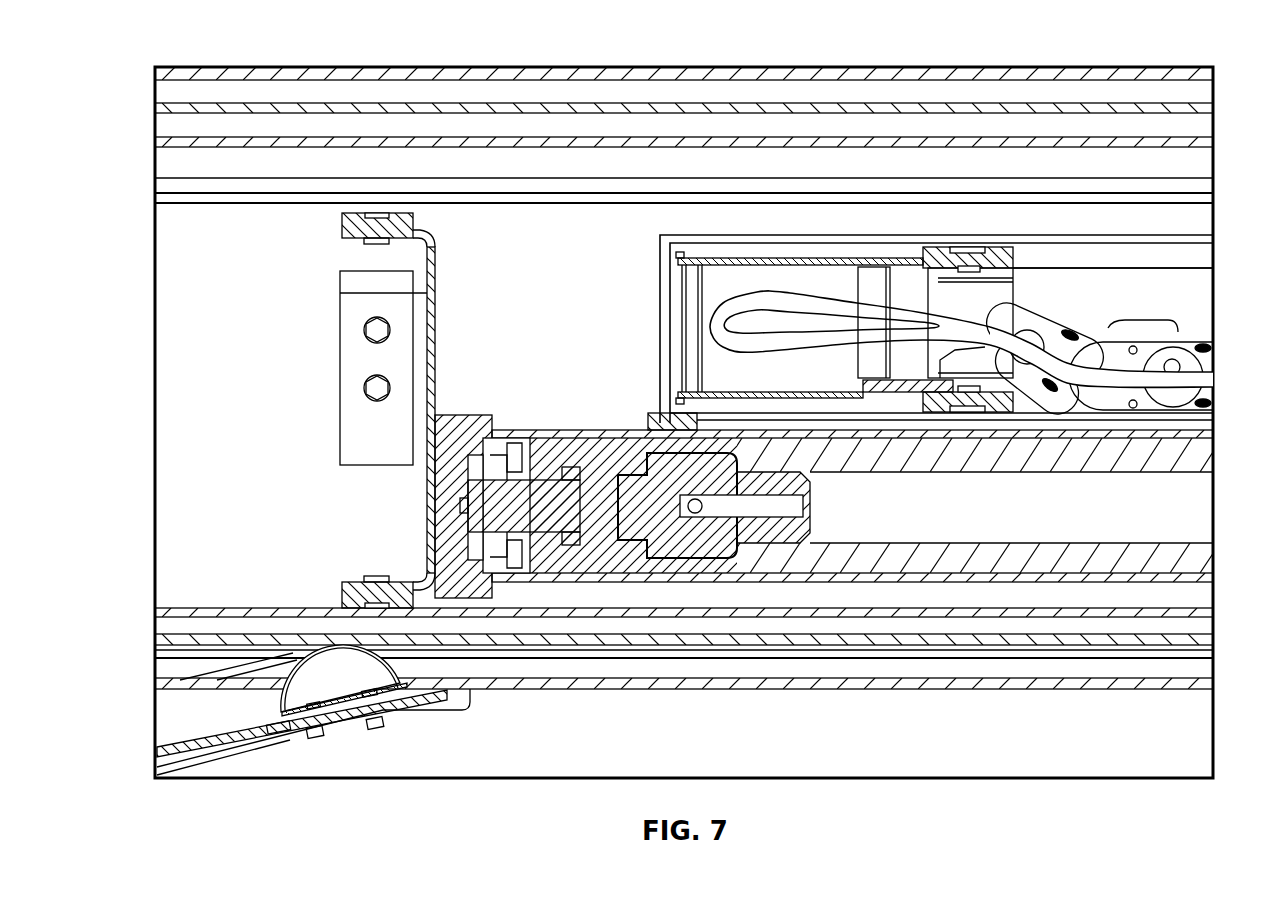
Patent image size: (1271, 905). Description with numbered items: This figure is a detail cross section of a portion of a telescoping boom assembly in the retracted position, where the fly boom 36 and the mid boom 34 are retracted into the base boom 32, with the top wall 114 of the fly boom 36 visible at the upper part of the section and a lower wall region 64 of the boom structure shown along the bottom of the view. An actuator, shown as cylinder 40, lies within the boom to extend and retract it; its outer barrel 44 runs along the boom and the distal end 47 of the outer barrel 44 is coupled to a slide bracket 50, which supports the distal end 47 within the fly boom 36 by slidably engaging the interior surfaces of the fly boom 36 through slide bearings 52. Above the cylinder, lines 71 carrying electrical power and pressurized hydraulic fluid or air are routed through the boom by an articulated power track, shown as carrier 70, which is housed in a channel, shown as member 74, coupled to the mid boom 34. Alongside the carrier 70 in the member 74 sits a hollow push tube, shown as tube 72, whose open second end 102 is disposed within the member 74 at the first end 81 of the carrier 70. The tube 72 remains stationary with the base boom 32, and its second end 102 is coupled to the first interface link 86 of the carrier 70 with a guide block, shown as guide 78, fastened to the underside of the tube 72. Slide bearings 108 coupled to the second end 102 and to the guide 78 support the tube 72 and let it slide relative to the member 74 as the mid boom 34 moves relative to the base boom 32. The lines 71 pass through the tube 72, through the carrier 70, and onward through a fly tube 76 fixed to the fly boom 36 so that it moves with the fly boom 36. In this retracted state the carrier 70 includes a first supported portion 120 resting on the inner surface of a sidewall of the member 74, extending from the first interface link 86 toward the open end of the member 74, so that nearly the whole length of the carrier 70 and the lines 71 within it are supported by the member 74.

The base boom 32 is at (490, 76).
The mid boom 34 is at (413, 108).
The top wall 114 is at (342, 135).
The fly boom 36 is at (170, 522).
The fly tube 76 is at (553, 203).
The slide bearings 52 is at (347, 223).
The slide bracket 50 is at (433, 367).
The distal end 47 is at (555, 600).
The cylinder 40 is at (687, 577).
The outer barrel 44 is at (787, 577).
The bottom wall 64 is at (828, 652).
The member 74 is at (663, 320).
The lines 71 is at (778, 297).
The carrier 70 is at (1203, 392).
The second end 102 is at (943, 293).
The slide bearings 108 is at (988, 272).
The guide 78 is at (890, 385).
The first end 81 is at (1055, 310).
The first interface link 86 is at (1067, 273).
The tube 72 is at (967, 363).
The first supported portion 120 is at (1173, 320).